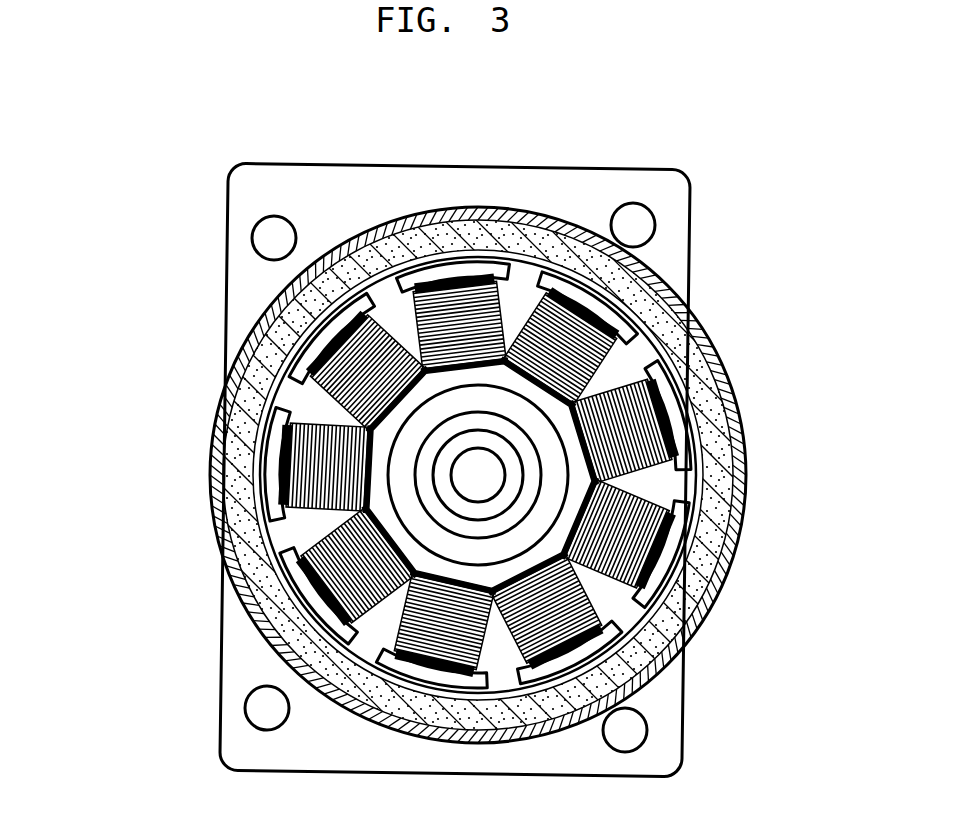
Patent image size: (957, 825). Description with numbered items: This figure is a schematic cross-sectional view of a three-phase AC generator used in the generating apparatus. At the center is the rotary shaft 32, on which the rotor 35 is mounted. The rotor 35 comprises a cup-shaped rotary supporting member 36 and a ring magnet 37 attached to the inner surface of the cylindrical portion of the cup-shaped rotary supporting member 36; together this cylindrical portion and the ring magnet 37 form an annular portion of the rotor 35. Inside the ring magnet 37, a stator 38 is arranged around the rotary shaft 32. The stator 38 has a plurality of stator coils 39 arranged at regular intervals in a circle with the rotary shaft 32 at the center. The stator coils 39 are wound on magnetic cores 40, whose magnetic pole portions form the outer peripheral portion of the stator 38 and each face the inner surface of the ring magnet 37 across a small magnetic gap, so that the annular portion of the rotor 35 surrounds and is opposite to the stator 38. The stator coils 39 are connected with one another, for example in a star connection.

The rotary shaft 32 is at (490, 474).
The rotor 35 is at (478, 475).
The cup-shaped rotary supporting member 36 is at (213, 488).
The ring magnet 37 is at (203, 448).
The stator 38 is at (398, 265).
The stator coils 39 is at (497, 303).
The magnetic cores 40 is at (268, 438).